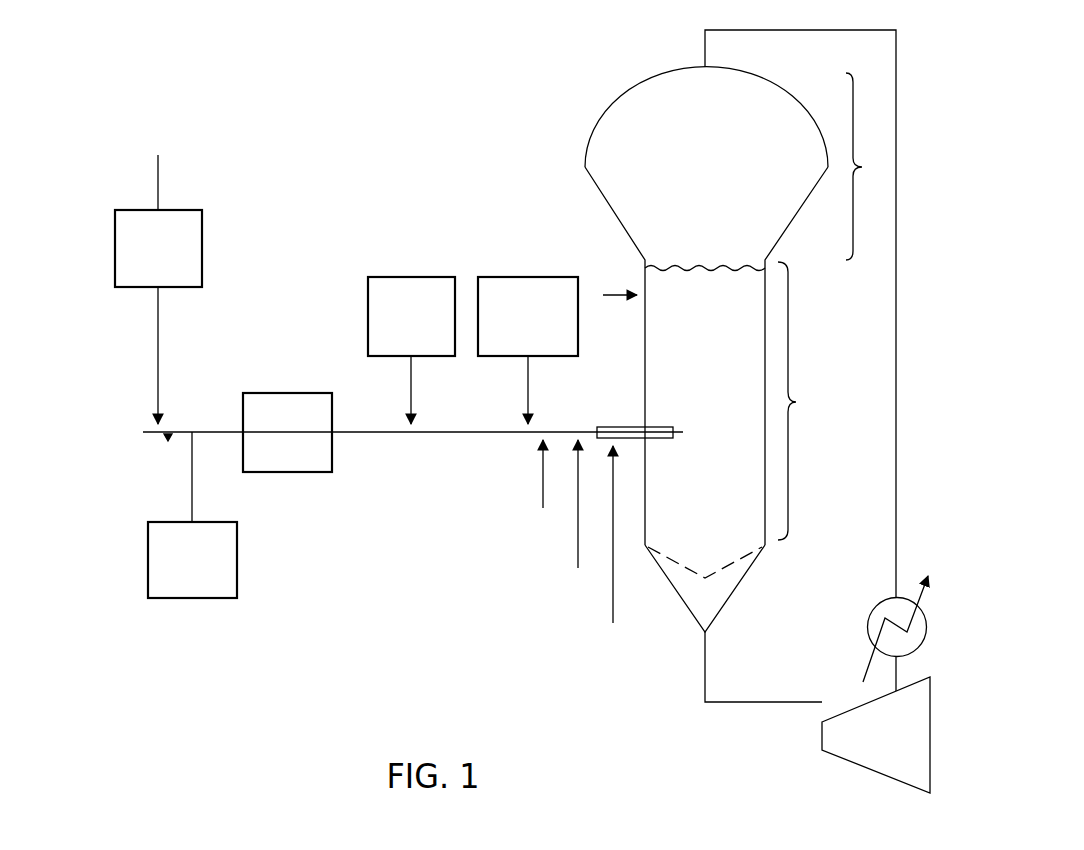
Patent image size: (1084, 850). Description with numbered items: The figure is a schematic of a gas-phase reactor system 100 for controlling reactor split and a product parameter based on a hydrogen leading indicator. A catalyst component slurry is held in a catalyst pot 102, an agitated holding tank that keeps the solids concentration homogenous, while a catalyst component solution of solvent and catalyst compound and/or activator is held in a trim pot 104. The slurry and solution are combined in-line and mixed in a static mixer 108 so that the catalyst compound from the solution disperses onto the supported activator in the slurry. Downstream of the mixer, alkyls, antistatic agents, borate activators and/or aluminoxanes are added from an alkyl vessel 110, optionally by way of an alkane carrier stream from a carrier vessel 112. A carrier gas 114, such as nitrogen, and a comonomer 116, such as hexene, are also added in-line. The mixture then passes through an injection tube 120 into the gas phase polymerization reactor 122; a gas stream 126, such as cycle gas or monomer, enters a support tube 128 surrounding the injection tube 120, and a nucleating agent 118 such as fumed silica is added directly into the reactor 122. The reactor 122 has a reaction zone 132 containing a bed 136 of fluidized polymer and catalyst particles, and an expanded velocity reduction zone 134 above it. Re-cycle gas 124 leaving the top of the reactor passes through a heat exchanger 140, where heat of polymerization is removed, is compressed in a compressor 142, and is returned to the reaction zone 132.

The gas-phase reactor system 100 is at (453, 739).
The catalyst pot 102 is at (115, 240).
The trim pot 104 is at (205, 598).
The static mixer 108 is at (292, 393).
The alkyl vessel 110 is at (420, 277).
The carrier vessel 112 is at (556, 277).
The carrier gas 114 is at (577, 515).
The comonomer 116 is at (542, 487).
The nucleating agent 118 is at (623, 295).
The injection tube 120 is at (676, 432).
The gas phase polymerization reactor 122 is at (612, 112).
The re-cycle gas 124 is at (897, 324).
The gas stream 126 is at (614, 546).
The support tube 128 is at (628, 427).
The reaction zone 132 is at (808, 401).
The velocity reduction zone 134 is at (864, 167).
The bed 136 is at (728, 513).
The heat exchanger 140 is at (875, 603).
The compressor 142 is at (857, 765).